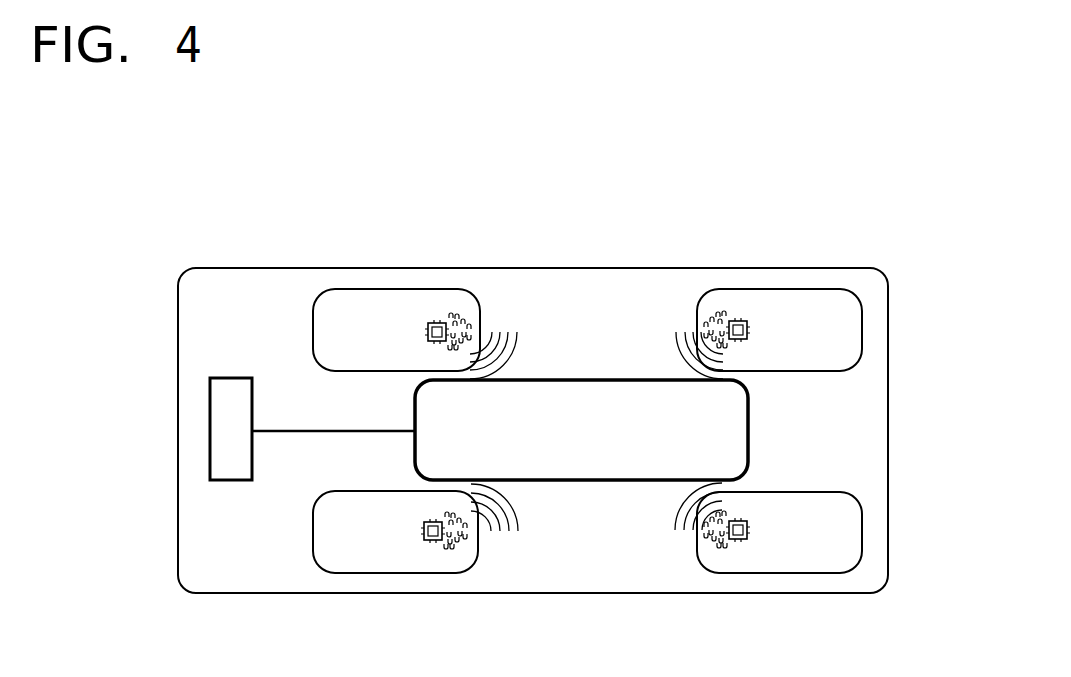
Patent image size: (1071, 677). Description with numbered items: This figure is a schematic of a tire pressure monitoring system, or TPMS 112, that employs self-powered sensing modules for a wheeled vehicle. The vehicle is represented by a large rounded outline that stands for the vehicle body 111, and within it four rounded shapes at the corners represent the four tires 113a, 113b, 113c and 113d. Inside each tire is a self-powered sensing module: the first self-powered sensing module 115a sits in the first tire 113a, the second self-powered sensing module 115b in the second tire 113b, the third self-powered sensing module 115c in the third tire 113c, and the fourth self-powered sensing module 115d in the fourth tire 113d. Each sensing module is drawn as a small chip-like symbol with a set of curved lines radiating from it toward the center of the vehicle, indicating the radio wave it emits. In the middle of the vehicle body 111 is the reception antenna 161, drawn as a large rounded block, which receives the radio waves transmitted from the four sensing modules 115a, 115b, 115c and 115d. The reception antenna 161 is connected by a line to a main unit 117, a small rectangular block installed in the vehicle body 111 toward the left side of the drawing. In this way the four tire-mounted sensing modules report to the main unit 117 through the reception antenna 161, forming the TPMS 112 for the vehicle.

The vehicle body 111 is at (584, 270).
The TPMS 112 is at (165, 388).
The main unit 117 is at (207, 447).
The reception antenna 161 is at (583, 380).
The tire 113a is at (367, 288).
The tire 113b is at (360, 573).
The tire 113c is at (790, 573).
The tire 113d is at (790, 289).
The self-powered sensing module 115a is at (448, 300).
The self-powered sensing module 115b is at (445, 550).
The self-powered sensing module 115c is at (720, 555).
The self-powered sensing module 115d is at (716, 305).